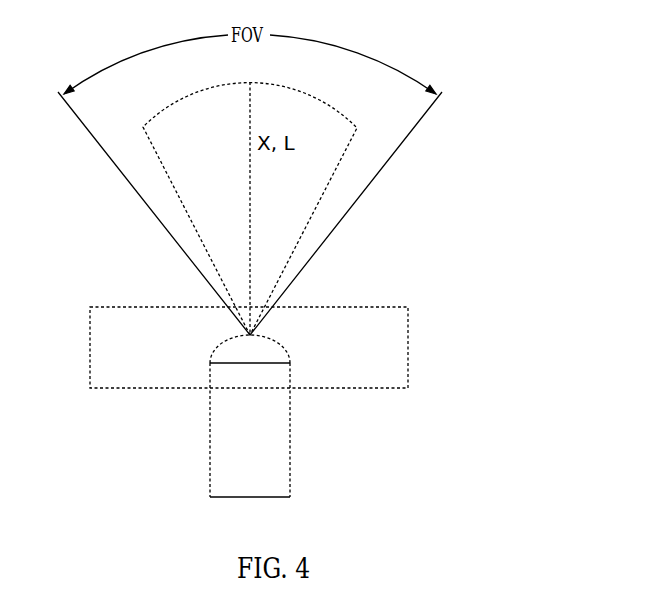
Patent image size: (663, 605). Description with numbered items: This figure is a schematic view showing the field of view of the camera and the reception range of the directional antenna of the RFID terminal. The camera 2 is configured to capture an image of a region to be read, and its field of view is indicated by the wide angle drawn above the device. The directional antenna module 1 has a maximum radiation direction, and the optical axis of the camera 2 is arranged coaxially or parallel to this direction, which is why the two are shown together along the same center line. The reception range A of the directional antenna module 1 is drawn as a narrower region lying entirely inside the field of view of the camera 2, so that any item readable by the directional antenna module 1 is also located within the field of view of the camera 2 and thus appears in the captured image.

The directional antenna module 1 is at (385, 353).
The camera 2 is at (276, 467).
The reception range A is at (357, 128).